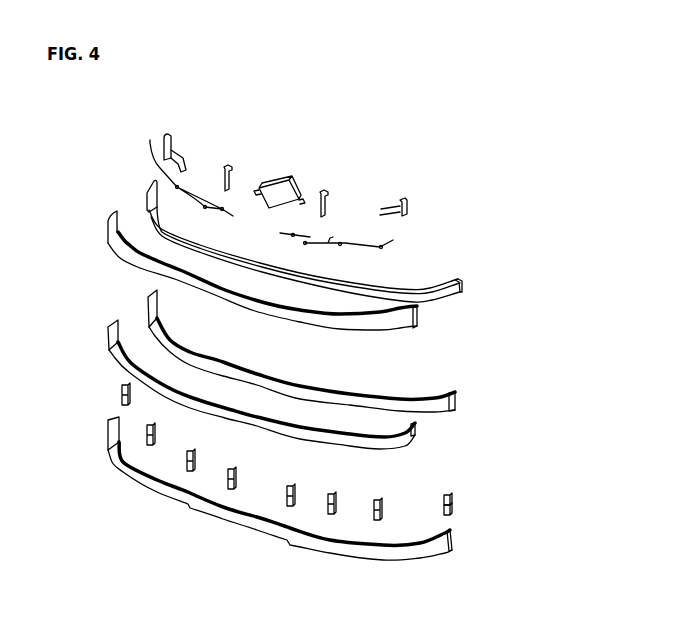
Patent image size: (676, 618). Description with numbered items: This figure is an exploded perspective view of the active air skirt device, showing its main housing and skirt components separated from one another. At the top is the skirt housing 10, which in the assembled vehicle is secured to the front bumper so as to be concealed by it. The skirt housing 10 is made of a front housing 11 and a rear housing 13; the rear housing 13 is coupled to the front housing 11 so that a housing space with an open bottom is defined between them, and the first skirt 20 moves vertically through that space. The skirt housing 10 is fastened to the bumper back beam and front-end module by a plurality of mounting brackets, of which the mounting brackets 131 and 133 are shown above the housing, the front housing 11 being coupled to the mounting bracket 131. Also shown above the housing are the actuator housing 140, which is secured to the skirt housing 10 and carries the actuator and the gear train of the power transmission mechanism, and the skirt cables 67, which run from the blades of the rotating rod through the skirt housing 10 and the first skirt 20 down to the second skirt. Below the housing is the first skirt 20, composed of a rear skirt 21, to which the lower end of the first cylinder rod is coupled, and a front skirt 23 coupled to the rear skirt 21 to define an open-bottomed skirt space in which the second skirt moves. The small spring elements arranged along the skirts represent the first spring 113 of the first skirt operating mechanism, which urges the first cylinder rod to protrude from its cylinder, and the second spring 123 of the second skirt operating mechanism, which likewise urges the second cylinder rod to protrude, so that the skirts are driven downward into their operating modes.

The skirt housing 10 is at (103, 208).
The front housing 11 is at (417, 318).
The rear housing 13 is at (460, 290).
The first skirt 20 is at (103, 324).
The rear skirt 21 is at (455, 402).
The front skirt 23 is at (416, 432).
The skirt cables 67 is at (197, 187).
The first spring 113 is at (451, 503).
The second spring 123 is at (452, 512).
The mounting bracket 131 is at (228, 165).
The mounting bracket 133 is at (176, 143).
The actuator housing 140 is at (278, 181).